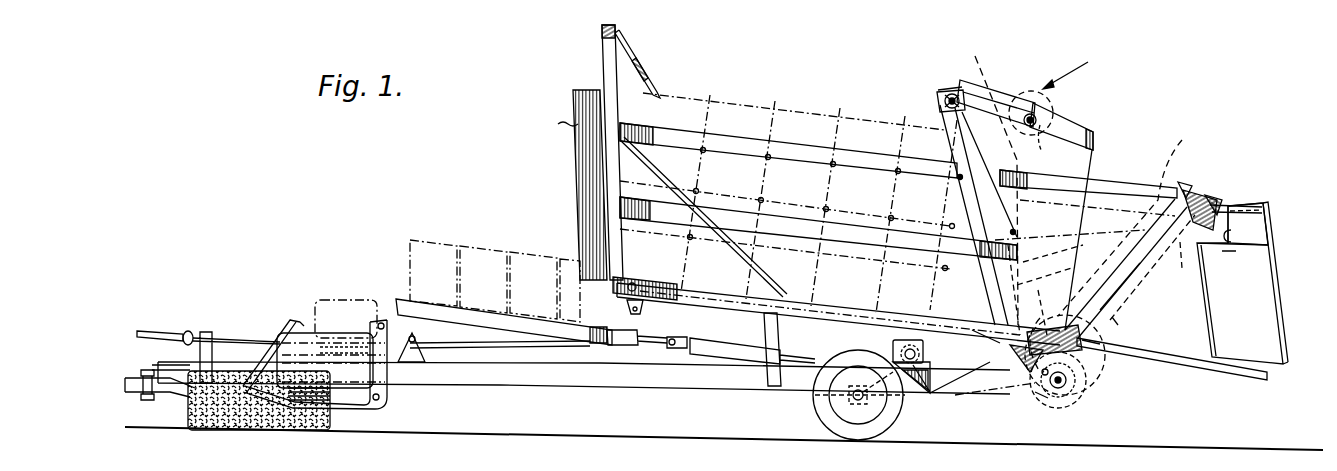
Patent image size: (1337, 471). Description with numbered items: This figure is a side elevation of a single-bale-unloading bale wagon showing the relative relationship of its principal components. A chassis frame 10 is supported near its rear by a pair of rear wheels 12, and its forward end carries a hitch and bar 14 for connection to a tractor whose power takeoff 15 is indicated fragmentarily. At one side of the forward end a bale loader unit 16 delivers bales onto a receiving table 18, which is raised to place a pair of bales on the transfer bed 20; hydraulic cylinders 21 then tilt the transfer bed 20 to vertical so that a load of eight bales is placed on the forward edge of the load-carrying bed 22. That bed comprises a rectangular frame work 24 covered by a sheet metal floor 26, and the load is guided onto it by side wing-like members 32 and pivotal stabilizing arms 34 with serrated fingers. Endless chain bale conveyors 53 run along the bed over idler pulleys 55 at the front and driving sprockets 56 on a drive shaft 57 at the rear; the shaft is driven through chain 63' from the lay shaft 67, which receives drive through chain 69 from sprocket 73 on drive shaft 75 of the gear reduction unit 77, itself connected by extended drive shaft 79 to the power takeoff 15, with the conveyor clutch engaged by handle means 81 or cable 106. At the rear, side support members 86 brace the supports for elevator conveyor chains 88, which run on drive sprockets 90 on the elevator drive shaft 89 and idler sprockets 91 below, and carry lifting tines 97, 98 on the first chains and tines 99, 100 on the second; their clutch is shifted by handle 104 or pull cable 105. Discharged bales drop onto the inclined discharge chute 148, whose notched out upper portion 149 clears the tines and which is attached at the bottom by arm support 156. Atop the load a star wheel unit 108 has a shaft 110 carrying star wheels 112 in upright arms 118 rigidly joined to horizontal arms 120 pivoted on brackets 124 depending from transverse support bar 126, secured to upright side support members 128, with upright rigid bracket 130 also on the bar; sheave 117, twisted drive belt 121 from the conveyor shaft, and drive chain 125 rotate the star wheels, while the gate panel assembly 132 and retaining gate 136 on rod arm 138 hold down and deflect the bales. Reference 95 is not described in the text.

The chassis frame 10 is at (522, 378).
The rear wheels 12 is at (893, 417).
The hitch and bar 14 is at (135, 389).
The power takeoff 15 is at (145, 336).
The bale loader unit 16 is at (340, 405).
The receiving table 18 is at (353, 300).
The transfer bed 20 is at (478, 312).
The hydraulic cylinders 21 is at (717, 366).
The load-carrying bed 22 is at (737, 310).
The rectangular frame work 24 is at (767, 305).
The sheet metal floor 26 is at (793, 297).
The side wing-like members 32 is at (582, 130).
The pivotal stabilizing arms 34 is at (640, 64).
The bale conveyors 53 is at (849, 302).
The idler pulleys 55 is at (650, 252).
The driving sprockets 56 is at (1104, 365).
The drive shaft 57 is at (1095, 341).
The chain 63' is at (1082, 380).
The lay shaft 67 is at (1068, 388).
The chain 69 is at (996, 383).
The sprocket 73 is at (921, 388).
The drive shaft 75 is at (884, 373).
The gear reduction unit 77 is at (893, 348).
The extended drive shaft 79 is at (489, 343).
The handle means 81 is at (1120, 321).
The side support members 86 is at (1100, 182).
The elevator conveyor chains 88 is at (1174, 162).
The elevator drive shaft 89 is at (1186, 196).
The drive sprockets 90 is at (1182, 181).
The idler sprockets 91 is at (1041, 400).
The pivot arm 95 is at (1140, 295).
The tines 97 is at (1237, 238).
The tines 98 is at (1117, 284).
The tines 99 is at (1214, 198).
The tines 100 is at (1215, 205).
The handle 104 is at (1152, 267).
The pull cable 105 is at (1145, 229).
The cable 106 is at (1115, 275).
The star wheel unit 108 is at (1082, 68).
The shaft 110 is at (1046, 111).
The star wheels 112 is at (1058, 109).
The sheave 117 is at (988, 178).
The upright arms 118 is at (1040, 106).
The horizontally extended arms 120 is at (983, 215).
The drive belt 121 is at (1072, 256).
The brackets 124 is at (940, 104).
The drive chain 125 is at (992, 94).
The transverse support bar 126 is at (941, 96).
The upright side support members 128 is at (993, 80).
The upright rigid bracket 130 is at (950, 90).
The gate panel assembly 132 is at (1062, 240).
The retaining gate 136 is at (1096, 148).
The rod arm 138 is at (1096, 135).
The discharge chute 148 is at (1242, 283).
The notched out upper portion 149 is at (1233, 235).
The arm support 156 is at (1184, 367).